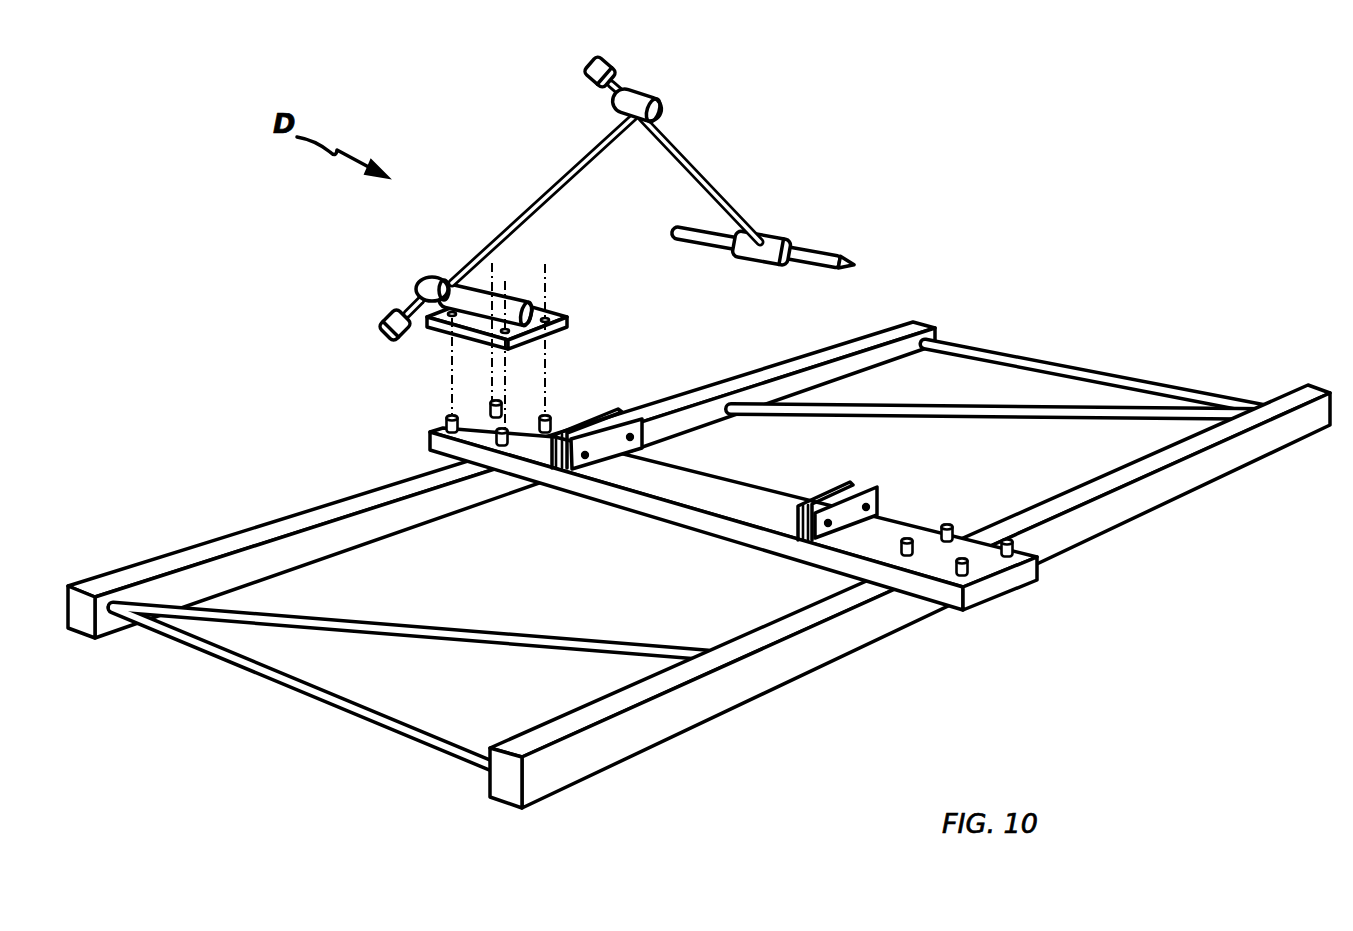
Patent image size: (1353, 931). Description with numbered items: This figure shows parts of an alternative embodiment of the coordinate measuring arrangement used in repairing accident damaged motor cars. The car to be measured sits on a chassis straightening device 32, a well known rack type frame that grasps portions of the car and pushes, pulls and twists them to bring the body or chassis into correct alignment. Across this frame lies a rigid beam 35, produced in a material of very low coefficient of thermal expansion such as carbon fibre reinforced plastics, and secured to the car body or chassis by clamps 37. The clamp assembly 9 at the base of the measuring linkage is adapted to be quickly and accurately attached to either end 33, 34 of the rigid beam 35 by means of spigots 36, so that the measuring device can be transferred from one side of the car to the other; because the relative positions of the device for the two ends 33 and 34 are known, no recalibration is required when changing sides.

The clamp assembly 9 is at (448, 331).
The chassis straightening device 32 is at (680, 708).
The end of rigid beam 33 is at (427, 440).
The end of rigid beam 34 is at (1016, 582).
The rigid beam 35 is at (688, 495).
The spigots 36 is at (903, 530).
The clamps 37 is at (650, 436).